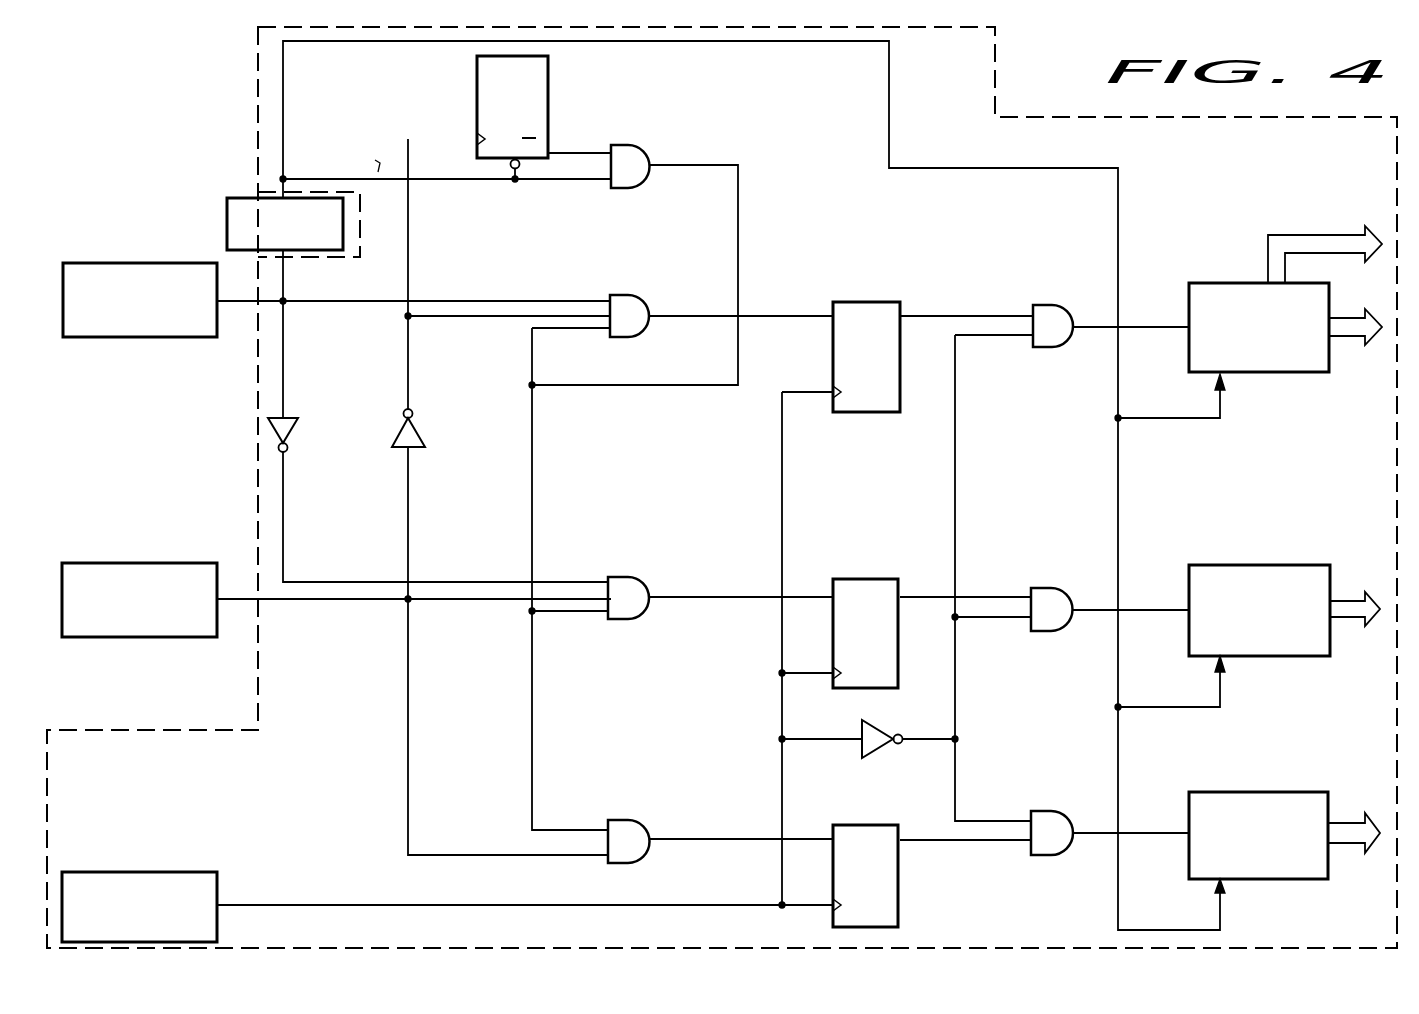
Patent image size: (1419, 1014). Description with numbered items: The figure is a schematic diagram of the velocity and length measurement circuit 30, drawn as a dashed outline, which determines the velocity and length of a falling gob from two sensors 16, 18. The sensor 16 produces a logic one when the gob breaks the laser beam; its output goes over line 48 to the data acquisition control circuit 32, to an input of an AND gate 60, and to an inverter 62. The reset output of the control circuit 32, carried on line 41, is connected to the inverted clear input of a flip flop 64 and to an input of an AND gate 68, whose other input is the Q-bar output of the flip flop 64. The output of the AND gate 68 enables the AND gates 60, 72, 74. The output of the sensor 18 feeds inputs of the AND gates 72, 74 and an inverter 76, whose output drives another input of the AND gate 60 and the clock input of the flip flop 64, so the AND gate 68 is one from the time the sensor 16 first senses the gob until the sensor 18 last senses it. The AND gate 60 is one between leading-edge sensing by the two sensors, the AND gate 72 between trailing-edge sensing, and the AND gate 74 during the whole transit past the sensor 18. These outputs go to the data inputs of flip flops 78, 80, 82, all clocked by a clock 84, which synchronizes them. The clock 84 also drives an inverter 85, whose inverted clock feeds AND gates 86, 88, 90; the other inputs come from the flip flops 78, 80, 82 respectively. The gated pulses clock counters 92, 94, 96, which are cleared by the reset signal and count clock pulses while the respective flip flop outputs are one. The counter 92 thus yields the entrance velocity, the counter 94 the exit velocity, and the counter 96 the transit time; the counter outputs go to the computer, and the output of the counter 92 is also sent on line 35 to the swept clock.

The sensor 16 is at (108, 337).
The sensor 18 is at (108, 637).
The velocity and length measurement circuit 30 is at (258, 75).
The data acquisition control circuit 32 is at (227, 210).
The line 35 is at (1332, 235).
The line 41 is at (280, 185).
The line 48 is at (283, 281).
The AND gate 60 is at (640, 268).
The inverter 62 is at (268, 430).
The flip flop 64 is at (548, 85).
The AND gate 68 is at (645, 120).
The AND gate 72 is at (638, 548).
The AND gate 74 is at (638, 792).
The inverter 76 is at (418, 432).
The flip flop 78 is at (858, 302).
The flip flop 80 is at (876, 544).
The flip flop 82 is at (848, 825).
The clock 84 is at (134, 872).
The inverter 85 is at (878, 748).
The AND gate 86 is at (1048, 306).
The AND gate 88 is at (1046, 588).
The AND gate 90 is at (1046, 811).
The counter 92 is at (1258, 372).
The counter 94 is at (1278, 565).
The counter 96 is at (1278, 792).